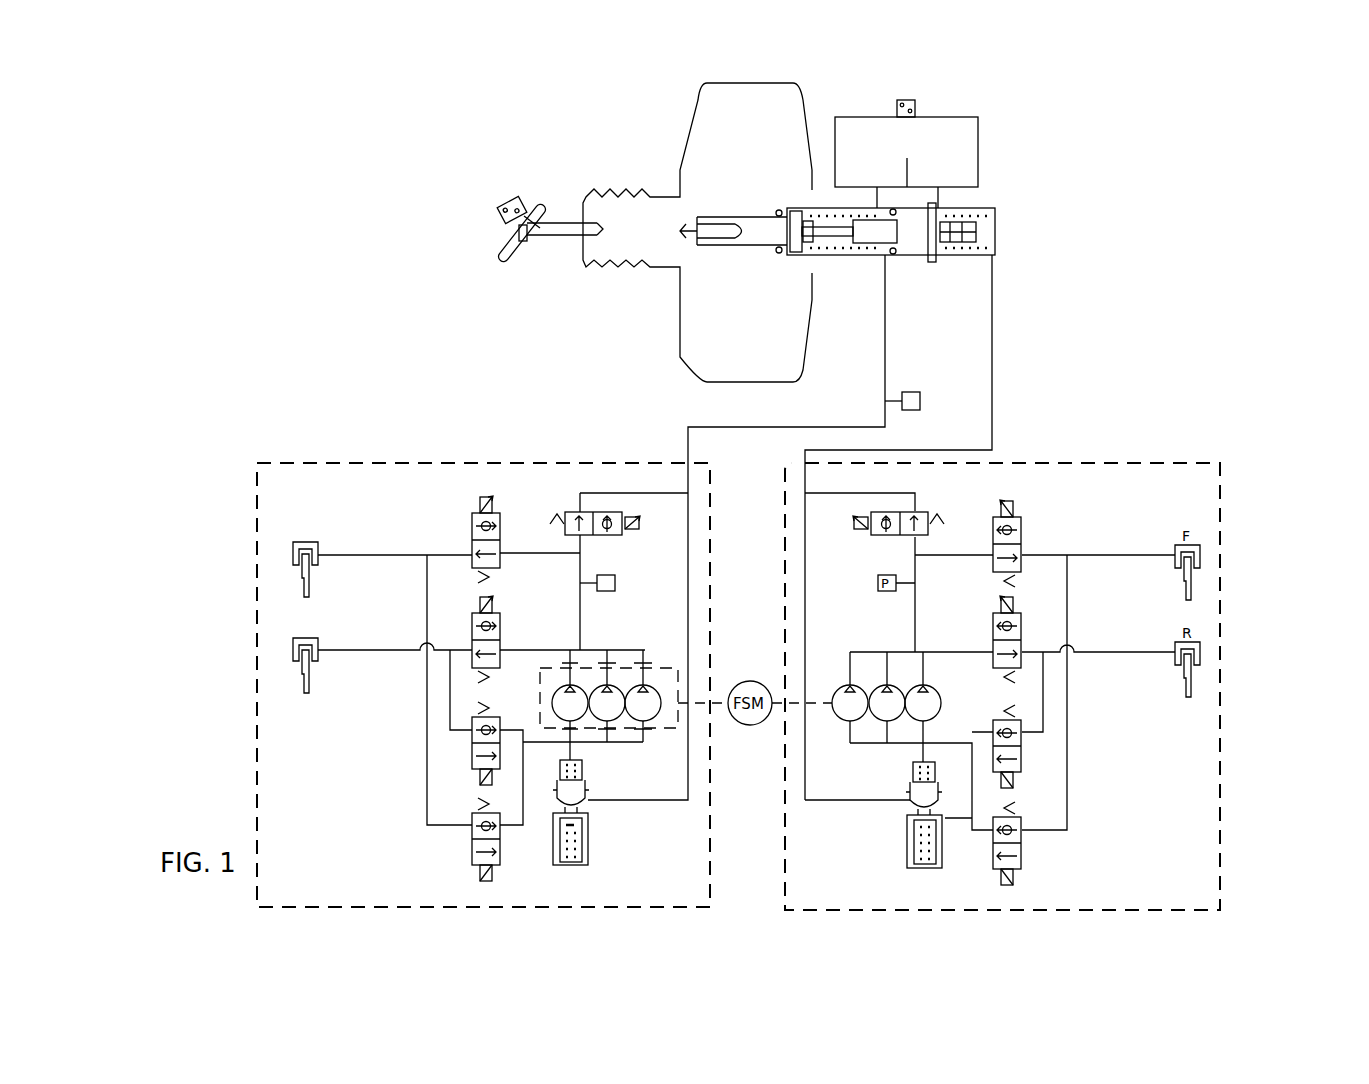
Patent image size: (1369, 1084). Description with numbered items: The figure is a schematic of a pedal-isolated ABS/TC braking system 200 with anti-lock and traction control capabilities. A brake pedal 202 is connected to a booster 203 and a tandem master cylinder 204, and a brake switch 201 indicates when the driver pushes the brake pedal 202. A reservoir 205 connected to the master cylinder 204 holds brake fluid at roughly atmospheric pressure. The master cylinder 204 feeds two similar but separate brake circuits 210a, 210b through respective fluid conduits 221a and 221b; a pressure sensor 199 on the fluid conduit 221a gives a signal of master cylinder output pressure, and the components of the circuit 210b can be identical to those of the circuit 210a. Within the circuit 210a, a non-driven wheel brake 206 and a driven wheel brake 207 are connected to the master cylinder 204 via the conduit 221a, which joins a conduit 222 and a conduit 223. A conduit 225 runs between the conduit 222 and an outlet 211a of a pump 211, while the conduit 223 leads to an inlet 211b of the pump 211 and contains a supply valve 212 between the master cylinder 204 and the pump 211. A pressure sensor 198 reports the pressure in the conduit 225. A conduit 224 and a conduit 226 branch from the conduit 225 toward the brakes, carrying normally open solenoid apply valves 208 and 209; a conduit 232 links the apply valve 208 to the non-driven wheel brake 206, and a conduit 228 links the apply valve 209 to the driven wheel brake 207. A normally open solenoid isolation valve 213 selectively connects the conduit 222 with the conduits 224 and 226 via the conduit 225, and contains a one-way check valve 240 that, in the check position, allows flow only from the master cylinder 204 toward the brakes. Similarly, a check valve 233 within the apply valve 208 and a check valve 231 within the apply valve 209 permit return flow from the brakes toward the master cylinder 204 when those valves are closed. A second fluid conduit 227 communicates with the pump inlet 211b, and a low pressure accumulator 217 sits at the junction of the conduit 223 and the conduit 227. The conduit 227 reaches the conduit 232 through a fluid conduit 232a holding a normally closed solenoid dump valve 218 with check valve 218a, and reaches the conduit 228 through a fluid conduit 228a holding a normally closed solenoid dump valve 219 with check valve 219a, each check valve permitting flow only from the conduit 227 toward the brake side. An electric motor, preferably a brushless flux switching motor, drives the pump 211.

The pedal-isolated ABS/TC braking system 200 is at (379, 132).
The brake switch 201 is at (508, 208).
The brake pedal 202 is at (500, 258).
The booster 203 is at (717, 124).
The tandem master cylinder 204 is at (997, 228).
The reservoir 205 is at (980, 143).
The non-driven wheel brake 206 is at (311, 545).
The driven wheel brake 207 is at (293, 666).
The solenoid apply valve 208 is at (470, 548).
The solenoid apply valve 209 is at (470, 640).
The brake circuit 210a is at (324, 437).
The brake circuit 210b is at (1137, 458).
The pump 211 is at (672, 656).
The pump outlet 211a is at (596, 650).
The pump inlet 211b is at (588, 745).
The supply valve 212 is at (596, 789).
The solenoid isolation valve 213 is at (555, 511).
The low pressure accumulator 217 is at (598, 851).
The solenoid dump valve 218 is at (472, 850).
The check valve 218a is at (472, 836).
The solenoid dump valve 219 is at (476, 750).
The check valve 219a is at (470, 736).
The fluid conduit 221a is at (887, 345).
The fluid conduit 221b is at (994, 345).
The conduit 222 is at (676, 492).
The conduit 223 is at (688, 800).
The conduit 224 is at (512, 553).
The conduit 225 is at (578, 598).
The conduit 226 is at (507, 650).
The second fluid conduit 227 is at (523, 830).
The conduit 228 is at (395, 683).
The fluid conduit 228a is at (448, 672).
The one-way check valve 231 is at (470, 625).
The conduit 232 is at (346, 555).
The fluid conduit 232a is at (427, 790).
The one-way check valve 233 is at (470, 525).
The one-way check valve 240 is at (612, 512).
The pressure sensor 198 is at (614, 576).
The pressure sensor 199 is at (921, 398).